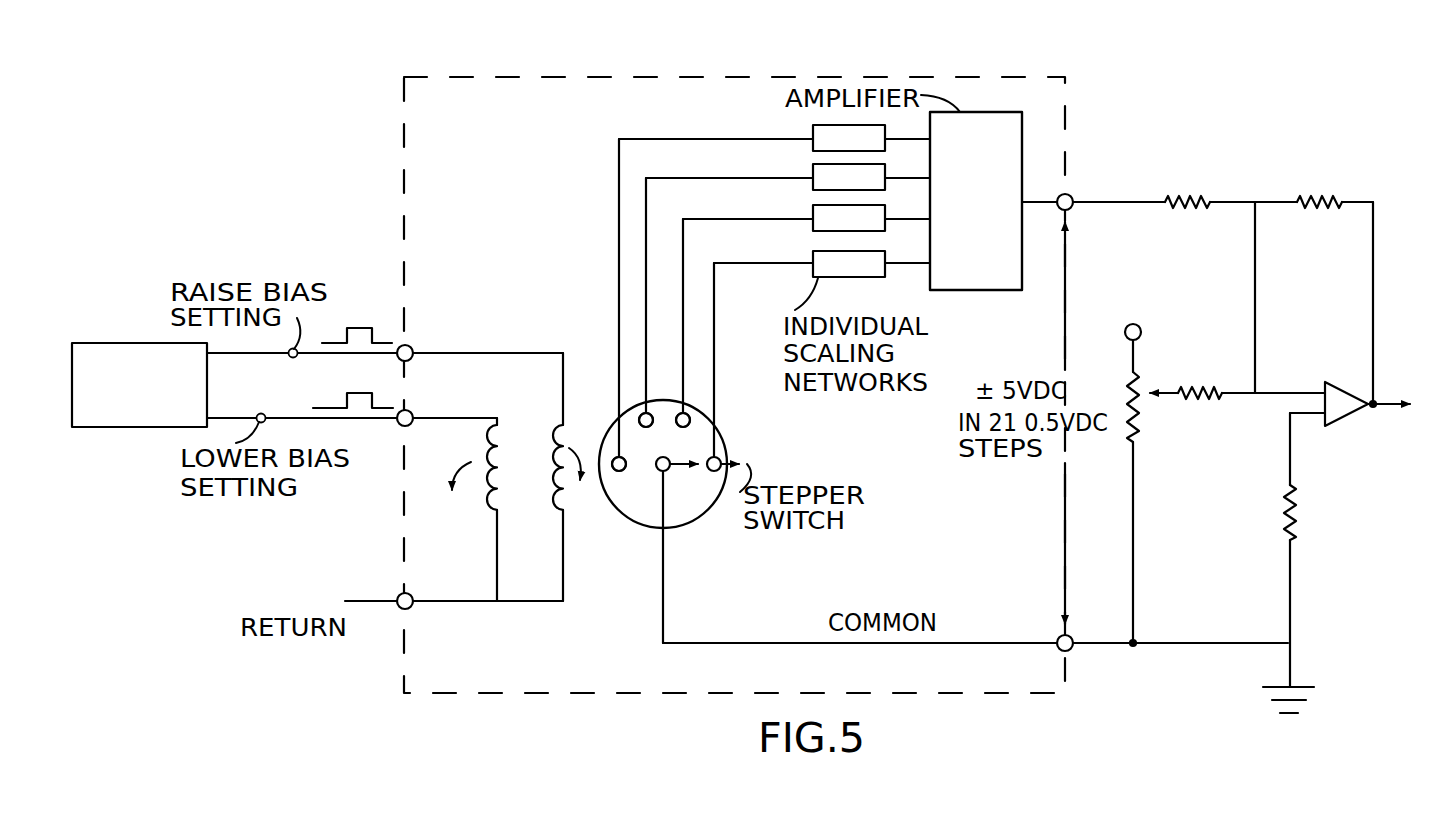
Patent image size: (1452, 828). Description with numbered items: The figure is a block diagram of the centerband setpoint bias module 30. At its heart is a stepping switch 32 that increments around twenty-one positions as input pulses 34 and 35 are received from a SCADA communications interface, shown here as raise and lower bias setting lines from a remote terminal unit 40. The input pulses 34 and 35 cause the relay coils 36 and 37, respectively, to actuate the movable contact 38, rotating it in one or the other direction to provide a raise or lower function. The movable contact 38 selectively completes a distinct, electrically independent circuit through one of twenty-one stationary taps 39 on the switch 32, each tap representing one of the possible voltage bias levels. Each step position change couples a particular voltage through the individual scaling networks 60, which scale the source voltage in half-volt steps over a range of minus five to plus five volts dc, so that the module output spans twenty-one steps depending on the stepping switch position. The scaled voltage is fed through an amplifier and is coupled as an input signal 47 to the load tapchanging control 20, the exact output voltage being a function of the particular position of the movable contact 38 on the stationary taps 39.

The setpoint module 30 is at (814, 66).
The stepping switch 32 is at (699, 509).
The input pulse 34 is at (338, 377).
The input pulse 35 is at (342, 331).
The relay coil 36 is at (486, 477).
The relay coil 37 is at (557, 498).
The movable contact 38 is at (669, 457).
The stationary taps 39 is at (613, 456).
The remote terminal unit (RTU) 40 is at (170, 342).
The input signal 47 is at (1377, 400).
The individual scaling networks 60 is at (756, 171).
The load tapchanging control 20 is at (1372, 500).